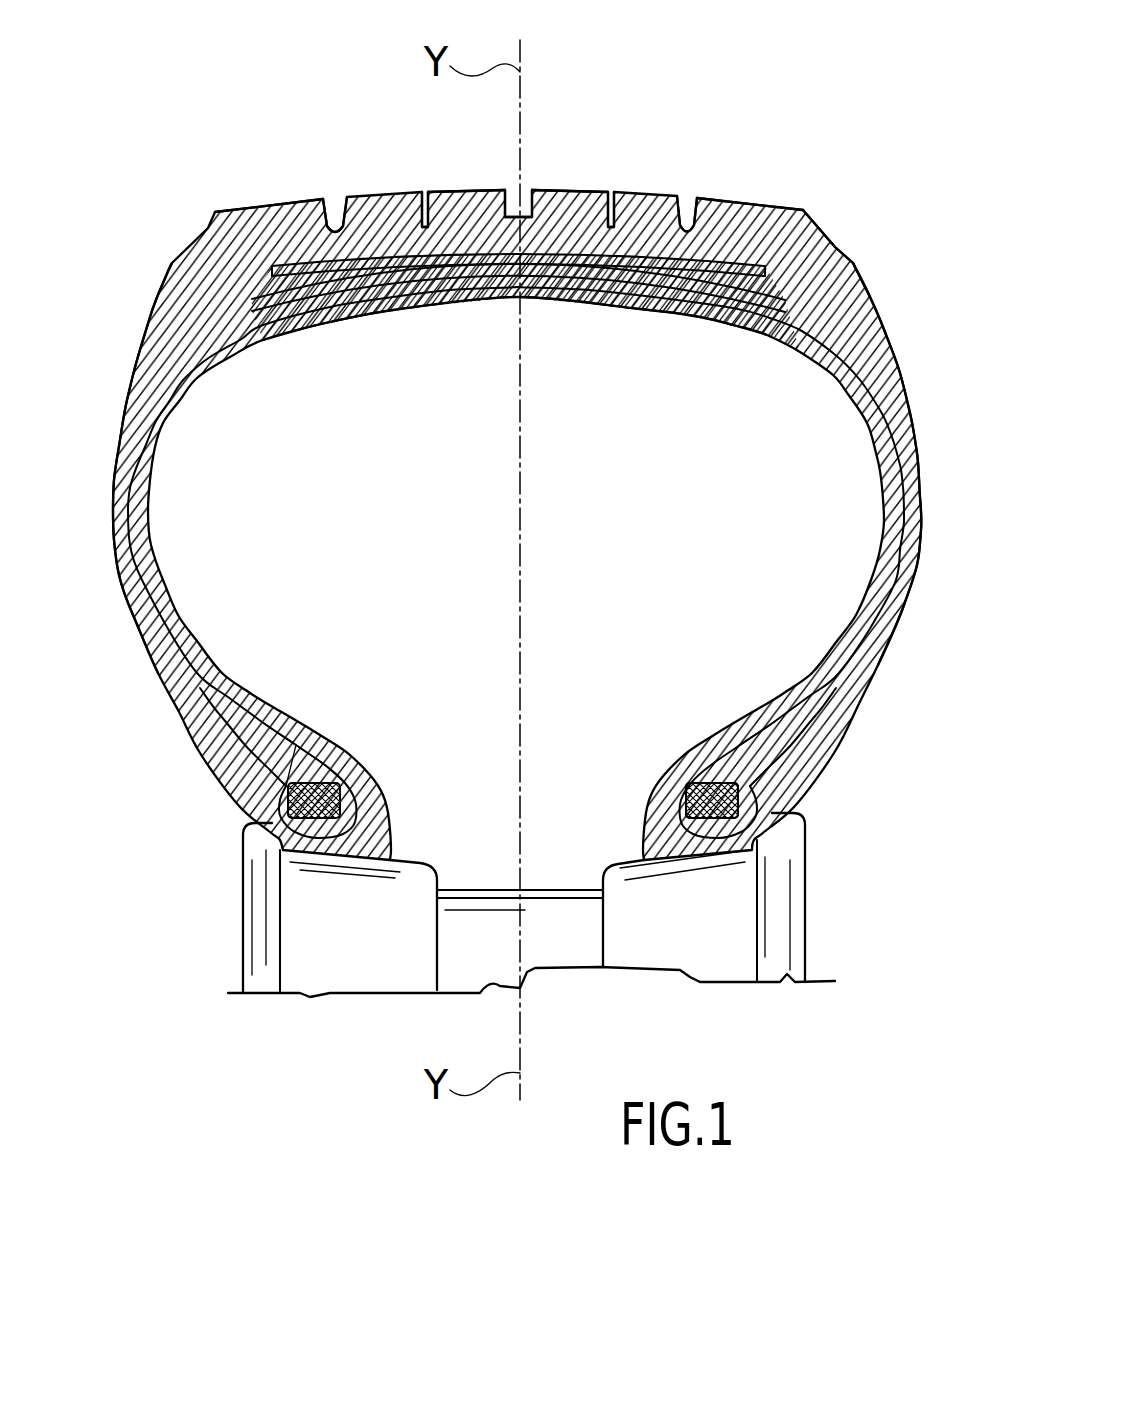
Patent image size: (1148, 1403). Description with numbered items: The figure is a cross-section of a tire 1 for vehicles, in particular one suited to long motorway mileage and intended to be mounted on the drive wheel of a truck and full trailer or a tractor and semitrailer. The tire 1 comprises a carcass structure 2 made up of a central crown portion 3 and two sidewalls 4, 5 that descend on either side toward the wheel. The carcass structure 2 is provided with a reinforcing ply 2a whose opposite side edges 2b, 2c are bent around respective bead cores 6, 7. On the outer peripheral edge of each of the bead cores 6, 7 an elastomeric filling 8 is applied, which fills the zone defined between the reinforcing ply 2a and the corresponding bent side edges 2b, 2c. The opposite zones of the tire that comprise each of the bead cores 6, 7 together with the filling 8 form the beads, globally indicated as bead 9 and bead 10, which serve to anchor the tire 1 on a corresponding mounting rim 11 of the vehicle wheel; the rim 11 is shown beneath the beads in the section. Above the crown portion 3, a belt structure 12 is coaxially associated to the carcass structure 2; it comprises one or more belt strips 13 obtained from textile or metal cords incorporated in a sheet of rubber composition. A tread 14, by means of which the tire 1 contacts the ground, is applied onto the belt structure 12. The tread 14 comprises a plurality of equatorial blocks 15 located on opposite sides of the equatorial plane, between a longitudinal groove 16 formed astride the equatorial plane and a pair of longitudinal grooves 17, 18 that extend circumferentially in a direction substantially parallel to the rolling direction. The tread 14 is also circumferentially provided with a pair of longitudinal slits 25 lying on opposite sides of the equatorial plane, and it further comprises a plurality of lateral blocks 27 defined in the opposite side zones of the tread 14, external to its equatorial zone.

The tire 1 is at (818, 88).
The carcass structure 2 is at (677, 302).
The reinforcing ply 2a is at (560, 303).
The side edge of reinforcing ply 2b is at (783, 760).
The side edge of reinforcing ply 2c is at (257, 778).
The central crown portion 3 is at (482, 298).
The sidewall 4 is at (872, 583).
The sidewall 5 is at (160, 600).
The bead core 6 is at (707, 786).
The bead core 7 is at (332, 780).
The elastomeric filling 8 is at (292, 735).
The bead 9 is at (405, 805).
The bead 10 is at (646, 786).
The mounting rim 11 is at (783, 935).
The belt structure 12 is at (236, 272).
The belt strip 13 is at (780, 273).
The tread 14 is at (783, 208).
The equatorial block 15 is at (440, 197).
The longitudinal groove 16 is at (513, 212).
The longitudinal groove 17 is at (334, 230).
The longitudinal groove 18 is at (688, 230).
The longitudinal slit 25 is at (424, 196).
The lateral block 27 is at (247, 206).